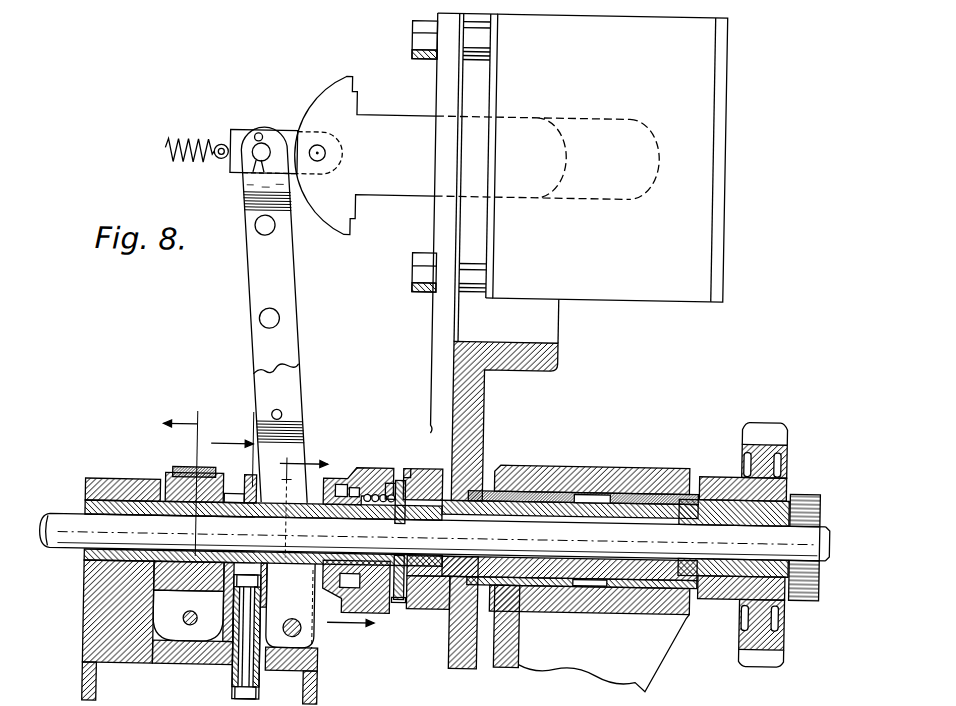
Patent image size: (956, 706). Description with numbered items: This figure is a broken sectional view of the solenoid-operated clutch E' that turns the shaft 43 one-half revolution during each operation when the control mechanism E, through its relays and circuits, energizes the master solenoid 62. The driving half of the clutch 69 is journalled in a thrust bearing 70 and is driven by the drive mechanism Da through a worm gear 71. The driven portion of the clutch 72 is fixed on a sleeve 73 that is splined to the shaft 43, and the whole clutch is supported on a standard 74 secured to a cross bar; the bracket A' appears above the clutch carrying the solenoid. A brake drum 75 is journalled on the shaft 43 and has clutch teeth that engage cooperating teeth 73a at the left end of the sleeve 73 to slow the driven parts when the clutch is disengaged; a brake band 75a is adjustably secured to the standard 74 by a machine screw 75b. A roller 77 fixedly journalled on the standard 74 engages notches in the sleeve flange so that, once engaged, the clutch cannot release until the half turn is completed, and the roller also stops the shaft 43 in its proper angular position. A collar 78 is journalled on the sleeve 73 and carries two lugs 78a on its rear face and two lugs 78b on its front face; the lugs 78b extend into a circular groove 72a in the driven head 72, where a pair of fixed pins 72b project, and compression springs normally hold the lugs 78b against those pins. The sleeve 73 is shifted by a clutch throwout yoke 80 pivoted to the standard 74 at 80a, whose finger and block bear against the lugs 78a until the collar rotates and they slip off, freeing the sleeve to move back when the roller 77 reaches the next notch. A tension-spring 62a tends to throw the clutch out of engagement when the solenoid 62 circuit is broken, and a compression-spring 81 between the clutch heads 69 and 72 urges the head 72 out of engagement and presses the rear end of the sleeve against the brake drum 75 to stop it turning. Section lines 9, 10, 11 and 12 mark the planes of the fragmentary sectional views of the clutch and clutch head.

The master solenoid 62 is at (422, 120).
The tension-spring 62a is at (181, 144).
The clutch throwout yoke 80 is at (289, 343).
The control mechanism E is at (206, 330).
The shaft 43 is at (58, 519).
The bracket A' is at (505, 399).
The brake drum 75 is at (168, 481).
The brake band 75a is at (177, 471).
The machine screw 75b is at (193, 626).
The sleeve 73 is at (244, 497).
The teeth 73a is at (234, 492).
The line 9 is at (179, 479).
The line 10 is at (243, 445).
The line 11 is at (331, 463).
The line 12 is at (343, 609).
The collar 78 is at (341, 481).
The lugs 78a is at (349, 488).
The lugs 78b is at (348, 480).
The fixed pins 72b is at (365, 480).
The solenoid operated clutch E' is at (398, 471).
The driving half of the clutch 69 is at (424, 482).
The thrust bearing 70 is at (571, 468).
The nut Da is at (604, 529).
The worm gear 71 is at (771, 418).
The roller 77 is at (212, 605).
The circular groove 72a is at (348, 592).
The driven portion of the clutch 72 is at (382, 606).
The compression-spring 81 is at (406, 601).
The pivot 80a is at (310, 638).
The standard 74 is at (304, 698).